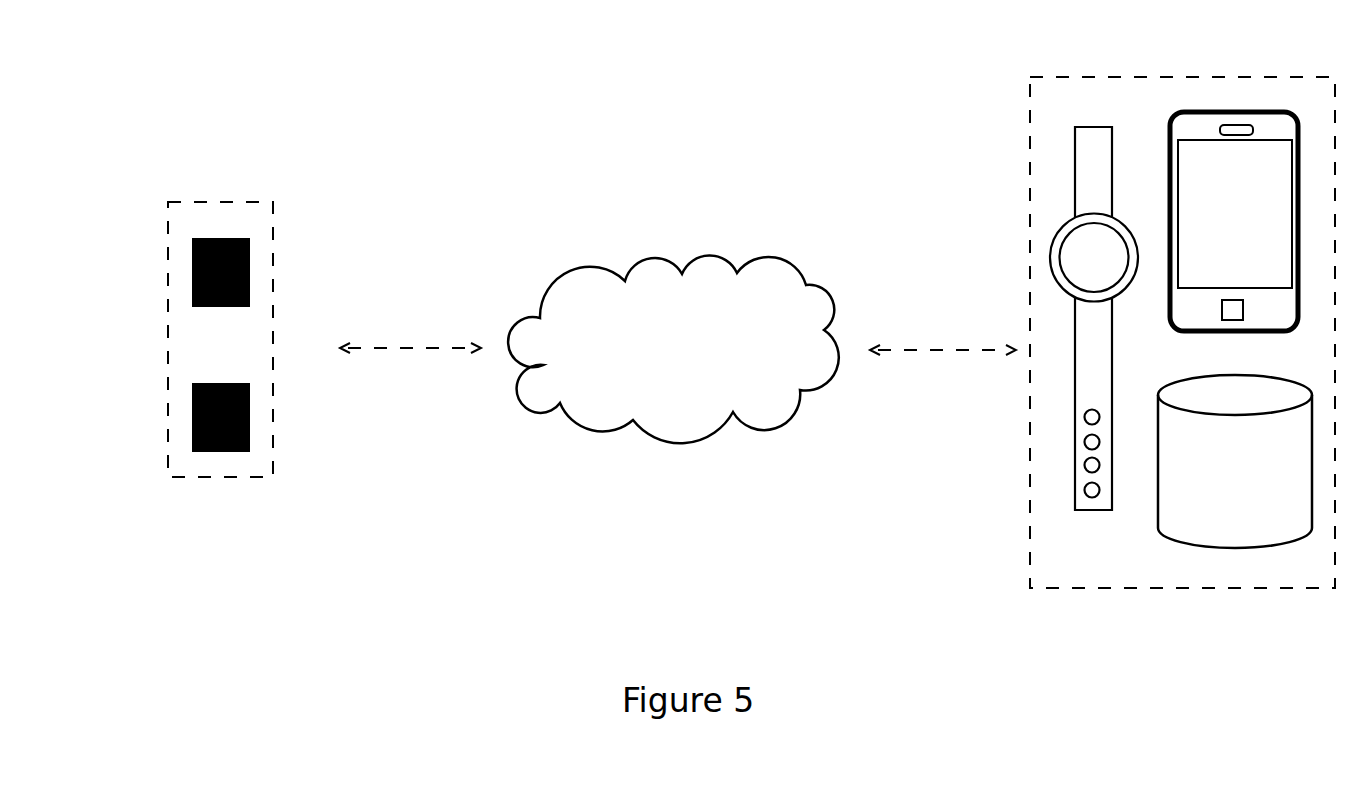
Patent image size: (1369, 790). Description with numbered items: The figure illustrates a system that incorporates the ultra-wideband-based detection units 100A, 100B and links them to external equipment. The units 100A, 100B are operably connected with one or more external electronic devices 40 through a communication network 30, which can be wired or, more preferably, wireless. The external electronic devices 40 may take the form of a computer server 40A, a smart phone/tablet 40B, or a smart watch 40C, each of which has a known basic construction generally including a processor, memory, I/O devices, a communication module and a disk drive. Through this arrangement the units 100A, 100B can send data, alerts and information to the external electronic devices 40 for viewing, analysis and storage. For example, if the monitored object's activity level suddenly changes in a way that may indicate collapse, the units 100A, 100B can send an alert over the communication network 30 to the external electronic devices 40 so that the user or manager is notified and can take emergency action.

The unit 100A is at (192, 272).
The unit 100B is at (192, 415).
The communication network 30 is at (700, 362).
The external electronic devices 40 is at (1177, 73).
The computer server 40A is at (1273, 493).
The smart phone/tablet 40B is at (1273, 232).
The smart watch 40C is at (1093, 502).